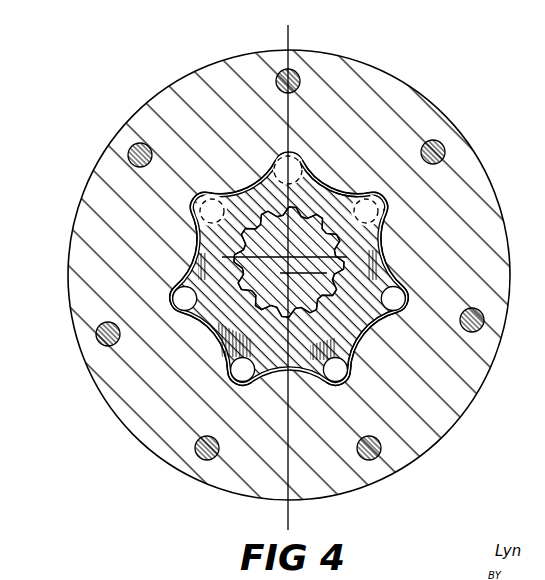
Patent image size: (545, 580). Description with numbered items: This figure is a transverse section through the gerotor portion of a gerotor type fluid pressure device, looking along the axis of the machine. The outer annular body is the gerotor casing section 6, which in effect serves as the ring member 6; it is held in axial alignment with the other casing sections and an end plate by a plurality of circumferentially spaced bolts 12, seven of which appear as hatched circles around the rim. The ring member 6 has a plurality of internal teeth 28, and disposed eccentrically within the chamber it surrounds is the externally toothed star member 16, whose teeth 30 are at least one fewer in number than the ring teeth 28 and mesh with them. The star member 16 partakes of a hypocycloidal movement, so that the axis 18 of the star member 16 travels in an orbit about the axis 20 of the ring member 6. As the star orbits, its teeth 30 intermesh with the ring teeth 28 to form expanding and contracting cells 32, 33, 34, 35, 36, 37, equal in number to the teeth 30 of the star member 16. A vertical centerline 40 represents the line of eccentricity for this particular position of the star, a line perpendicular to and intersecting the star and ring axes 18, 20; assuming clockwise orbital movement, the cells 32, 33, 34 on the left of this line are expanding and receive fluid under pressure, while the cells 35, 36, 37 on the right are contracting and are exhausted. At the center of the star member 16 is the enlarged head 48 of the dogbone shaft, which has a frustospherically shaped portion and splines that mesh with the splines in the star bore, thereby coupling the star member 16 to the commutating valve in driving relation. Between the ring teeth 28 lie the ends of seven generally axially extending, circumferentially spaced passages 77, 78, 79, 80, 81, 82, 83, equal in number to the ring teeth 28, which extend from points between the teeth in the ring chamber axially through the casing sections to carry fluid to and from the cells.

The gerotor casing section 6 is at (474, 182).
The bolts 12 is at (486, 320).
The star member 16 is at (343, 342).
The axis of star member 18 is at (287, 240).
The axis of ring member 20 is at (300, 268).
The internal teeth 28 is at (231, 364).
The teeth 30 is at (200, 272).
The cell 32 is at (231, 351).
The cell 33 is at (198, 252).
The cell 34 is at (227, 195).
The cell 35 is at (338, 195).
The cell 36 is at (382, 250).
The cell 37 is at (345, 358).
The vertical centerline 40 is at (289, 44).
The enlarged head 48 is at (314, 297).
The passage 77 is at (243, 382).
The passage 78 is at (178, 299).
The passage 79 is at (200, 197).
The passage 80 is at (319, 169).
The passage 81 is at (380, 200).
The passage 82 is at (398, 299).
The passage 83 is at (336, 383).